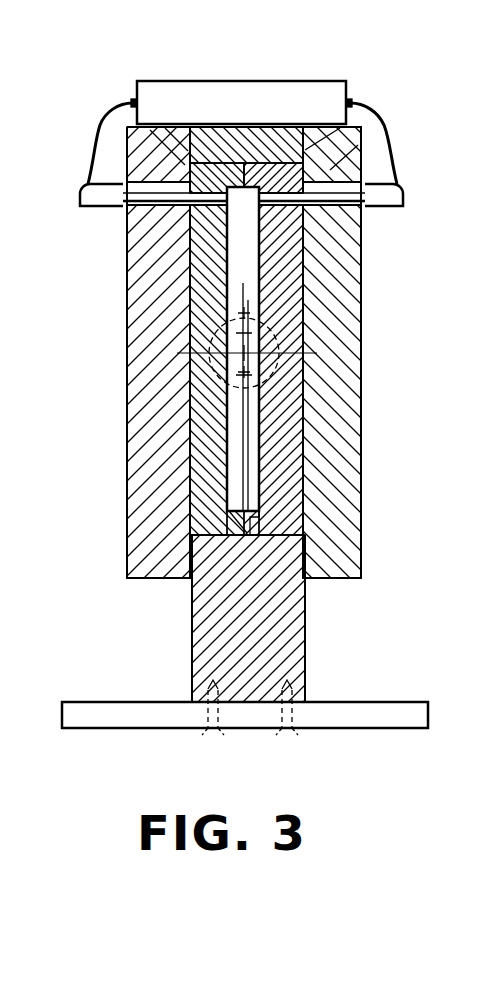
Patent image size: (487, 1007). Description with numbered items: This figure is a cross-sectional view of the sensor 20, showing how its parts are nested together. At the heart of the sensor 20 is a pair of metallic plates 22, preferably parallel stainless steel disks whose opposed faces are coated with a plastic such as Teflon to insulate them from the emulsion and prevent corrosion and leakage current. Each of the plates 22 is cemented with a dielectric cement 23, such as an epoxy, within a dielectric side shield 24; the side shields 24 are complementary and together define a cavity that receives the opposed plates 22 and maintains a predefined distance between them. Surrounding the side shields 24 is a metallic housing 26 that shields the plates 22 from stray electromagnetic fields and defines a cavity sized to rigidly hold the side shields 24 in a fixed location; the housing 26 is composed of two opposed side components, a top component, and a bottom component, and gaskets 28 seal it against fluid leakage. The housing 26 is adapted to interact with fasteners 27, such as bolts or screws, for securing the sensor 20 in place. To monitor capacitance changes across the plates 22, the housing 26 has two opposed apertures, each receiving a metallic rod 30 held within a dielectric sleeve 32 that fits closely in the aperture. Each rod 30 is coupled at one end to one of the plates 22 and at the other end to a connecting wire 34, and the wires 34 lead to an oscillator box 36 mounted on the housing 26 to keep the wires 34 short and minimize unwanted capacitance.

The sensor 20 is at (137, 613).
The metallic plates 22 is at (223, 400).
The dielectric cement 23 is at (270, 421).
The dielectric side shield 24 is at (205, 257).
The metallic housing 26 is at (363, 578).
The fasteners 27 is at (200, 731).
The gaskets 28 is at (187, 157).
The metallic rod 30 is at (118, 187).
The dielectric sleeve 32 is at (190, 206).
The connecting wire 34 is at (104, 124).
The oscillator box 36 is at (350, 85).